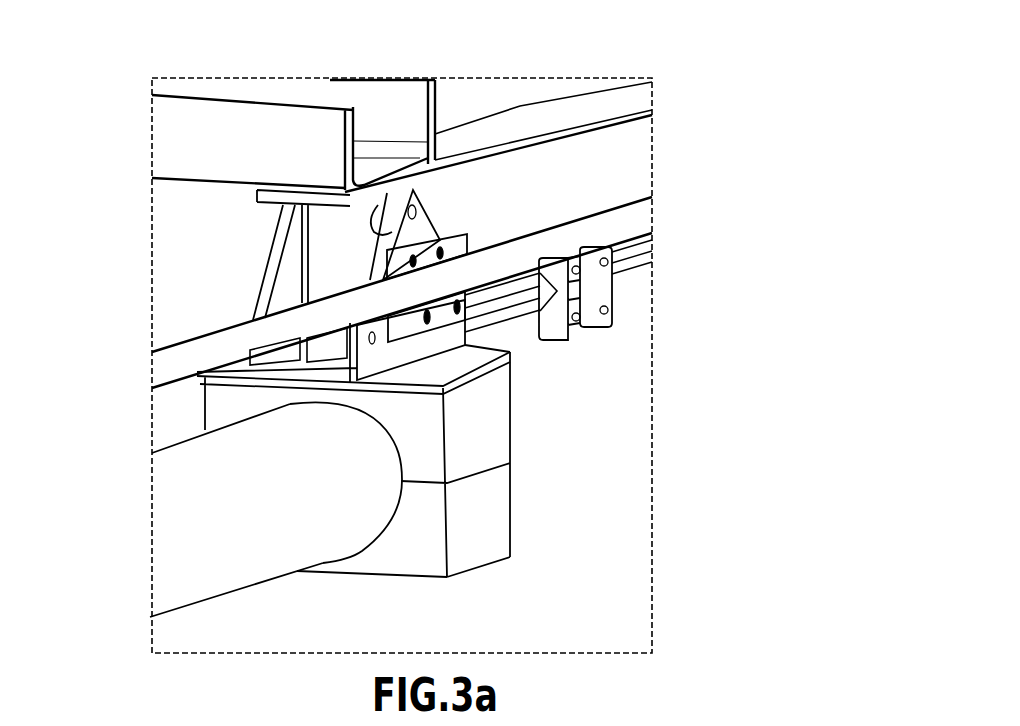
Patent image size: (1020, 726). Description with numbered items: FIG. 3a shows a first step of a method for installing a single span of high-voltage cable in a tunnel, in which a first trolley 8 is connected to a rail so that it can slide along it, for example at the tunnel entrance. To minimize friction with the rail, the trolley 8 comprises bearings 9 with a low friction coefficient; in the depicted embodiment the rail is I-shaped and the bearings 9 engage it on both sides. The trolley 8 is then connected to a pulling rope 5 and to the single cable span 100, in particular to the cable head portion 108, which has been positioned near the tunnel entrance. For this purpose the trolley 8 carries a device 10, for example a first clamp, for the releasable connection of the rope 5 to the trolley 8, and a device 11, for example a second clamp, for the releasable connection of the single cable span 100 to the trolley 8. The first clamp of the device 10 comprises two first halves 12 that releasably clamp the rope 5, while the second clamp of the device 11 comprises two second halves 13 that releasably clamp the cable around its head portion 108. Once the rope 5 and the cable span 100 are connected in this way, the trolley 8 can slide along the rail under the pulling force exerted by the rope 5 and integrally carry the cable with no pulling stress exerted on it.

The rope 5 is at (163, 369).
The first trolley 8 is at (540, 387).
The bearings 9 is at (385, 210).
The device 10 is at (620, 222).
The device 11 is at (530, 517).
The first halves 12 is at (583, 257).
The second halves 13 is at (480, 508).
The single cable span 100 is at (228, 545).
The head portion 108 is at (205, 487).